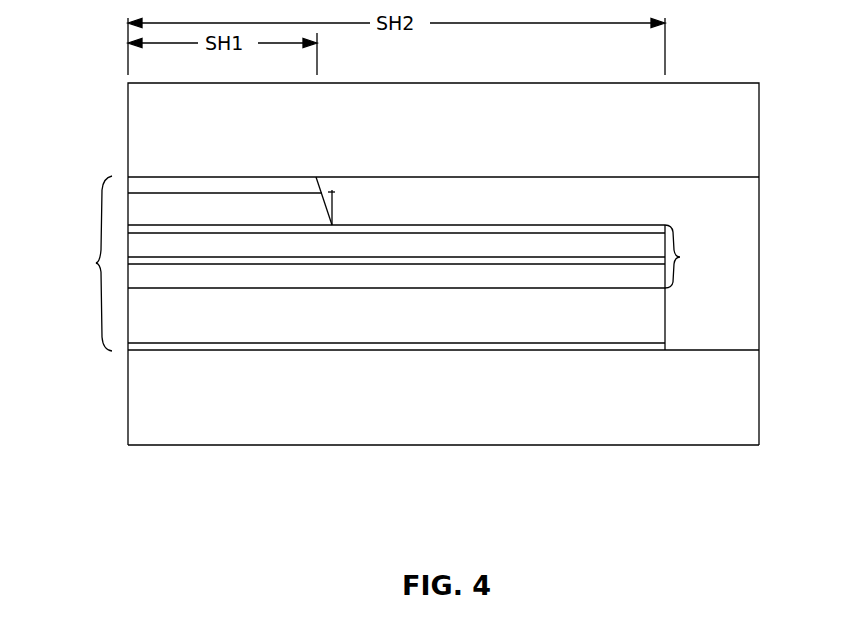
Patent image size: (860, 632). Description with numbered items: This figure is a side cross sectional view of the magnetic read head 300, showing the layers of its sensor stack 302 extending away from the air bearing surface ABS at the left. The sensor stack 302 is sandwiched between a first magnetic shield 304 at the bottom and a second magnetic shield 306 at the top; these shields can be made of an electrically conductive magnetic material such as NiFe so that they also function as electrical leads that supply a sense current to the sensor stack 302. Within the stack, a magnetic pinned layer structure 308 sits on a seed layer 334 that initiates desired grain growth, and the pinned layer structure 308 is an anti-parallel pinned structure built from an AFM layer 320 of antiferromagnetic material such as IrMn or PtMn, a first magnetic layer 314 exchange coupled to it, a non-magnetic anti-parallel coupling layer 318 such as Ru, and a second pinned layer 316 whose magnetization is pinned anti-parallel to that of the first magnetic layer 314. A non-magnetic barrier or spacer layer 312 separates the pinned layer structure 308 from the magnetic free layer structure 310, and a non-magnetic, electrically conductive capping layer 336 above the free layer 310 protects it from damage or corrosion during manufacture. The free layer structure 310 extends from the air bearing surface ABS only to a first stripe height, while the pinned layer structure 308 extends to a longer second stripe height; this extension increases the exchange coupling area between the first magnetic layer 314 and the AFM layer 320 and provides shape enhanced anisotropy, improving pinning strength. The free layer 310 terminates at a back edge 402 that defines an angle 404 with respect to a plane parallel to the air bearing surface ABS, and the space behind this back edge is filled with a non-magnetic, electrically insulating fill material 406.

The magnetic read head 300 is at (680, 83).
The sensor stack 302 is at (100, 200).
The first magnetic shield 304 is at (462, 397).
The second magnetic shield 306 is at (460, 130).
The magnetic pinned layer structure 308 is at (670, 228).
The magnetic free layer structure 310 is at (248, 210).
The non-magnetic barrier or spacer layer 312 is at (252, 229).
The first magnetic layer (AP1) 314 is at (413, 275).
The second pinned layer (AP2) 316 is at (413, 246).
The anti-parallel coupling layer 318 is at (498, 258).
The AFM layer 320 is at (420, 321).
The seed layer 334 is at (493, 345).
The capping layer 336 is at (230, 185).
The back edge 402 is at (322, 188).
The angle 404 is at (334, 207).
The fill material 406 is at (604, 202).
The air bearing surface ABS is at (128, 125).